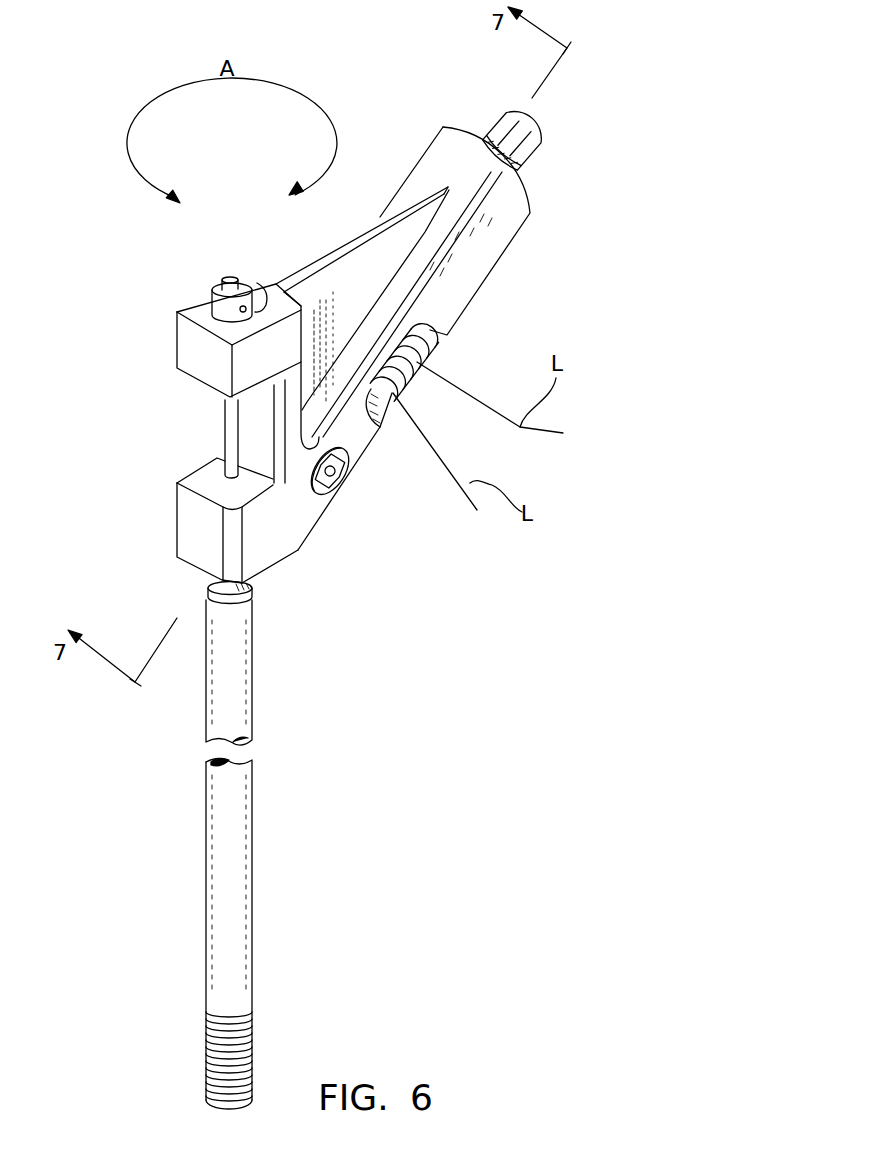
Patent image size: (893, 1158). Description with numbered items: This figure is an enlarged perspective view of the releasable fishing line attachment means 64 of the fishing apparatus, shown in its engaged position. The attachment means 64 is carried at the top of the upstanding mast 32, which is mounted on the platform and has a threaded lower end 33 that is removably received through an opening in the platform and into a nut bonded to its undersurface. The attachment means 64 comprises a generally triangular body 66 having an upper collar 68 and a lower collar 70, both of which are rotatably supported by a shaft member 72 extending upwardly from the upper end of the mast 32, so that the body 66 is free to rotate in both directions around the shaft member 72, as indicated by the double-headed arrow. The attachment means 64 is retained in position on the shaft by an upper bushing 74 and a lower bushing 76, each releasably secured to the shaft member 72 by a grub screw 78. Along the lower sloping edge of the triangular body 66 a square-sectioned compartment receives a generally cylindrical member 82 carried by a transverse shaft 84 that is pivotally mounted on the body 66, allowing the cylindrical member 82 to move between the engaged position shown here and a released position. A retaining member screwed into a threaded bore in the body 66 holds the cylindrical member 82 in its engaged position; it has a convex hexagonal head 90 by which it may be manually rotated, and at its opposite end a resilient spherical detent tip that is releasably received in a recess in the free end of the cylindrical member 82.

The mast 32 is at (253, 660).
The threaded lower end 33 is at (203, 1040).
The fishing line attachment means 64 is at (390, 132).
The triangular body 66 is at (364, 258).
The upper collar 68 is at (230, 362).
The lower collar 70 is at (195, 519).
The shaft member 72 is at (224, 442).
The upper bushing 74 is at (177, 314).
The lower bushing 76 is at (208, 592).
The grub screw 78 is at (257, 283).
The cylindrical member 82 is at (392, 405).
The transverse shaft 84 is at (333, 472).
The convex hexagonal head 90 is at (534, 136).